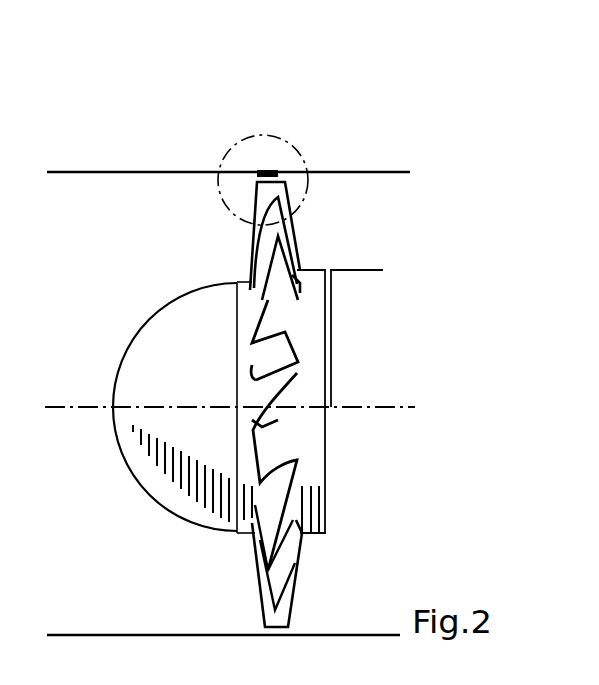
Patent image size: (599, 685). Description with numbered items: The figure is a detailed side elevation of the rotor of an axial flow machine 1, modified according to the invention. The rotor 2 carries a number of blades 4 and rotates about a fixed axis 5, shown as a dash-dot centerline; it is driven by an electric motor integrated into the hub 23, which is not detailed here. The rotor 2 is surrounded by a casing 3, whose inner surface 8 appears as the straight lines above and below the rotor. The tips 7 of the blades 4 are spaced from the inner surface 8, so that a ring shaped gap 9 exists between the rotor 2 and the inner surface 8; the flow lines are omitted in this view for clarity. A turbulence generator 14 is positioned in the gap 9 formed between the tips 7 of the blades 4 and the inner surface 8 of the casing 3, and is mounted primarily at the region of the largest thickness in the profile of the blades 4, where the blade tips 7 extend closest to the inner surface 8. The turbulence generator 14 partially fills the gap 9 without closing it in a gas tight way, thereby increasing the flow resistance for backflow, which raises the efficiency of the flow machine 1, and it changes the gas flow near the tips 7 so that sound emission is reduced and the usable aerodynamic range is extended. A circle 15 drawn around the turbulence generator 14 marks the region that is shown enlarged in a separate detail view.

The axial flow machine 1 is at (219, 104).
The rotor 2 is at (318, 267).
The casing 3 is at (213, 636).
The blades 4 is at (280, 478).
The axis 5 is at (97, 405).
The tips 7 is at (278, 550).
The inner surface 8 is at (155, 194).
The gap 9 is at (273, 633).
The turbulence generator 14 is at (267, 171).
The circle 15 is at (254, 133).
The hub 23 is at (372, 290).